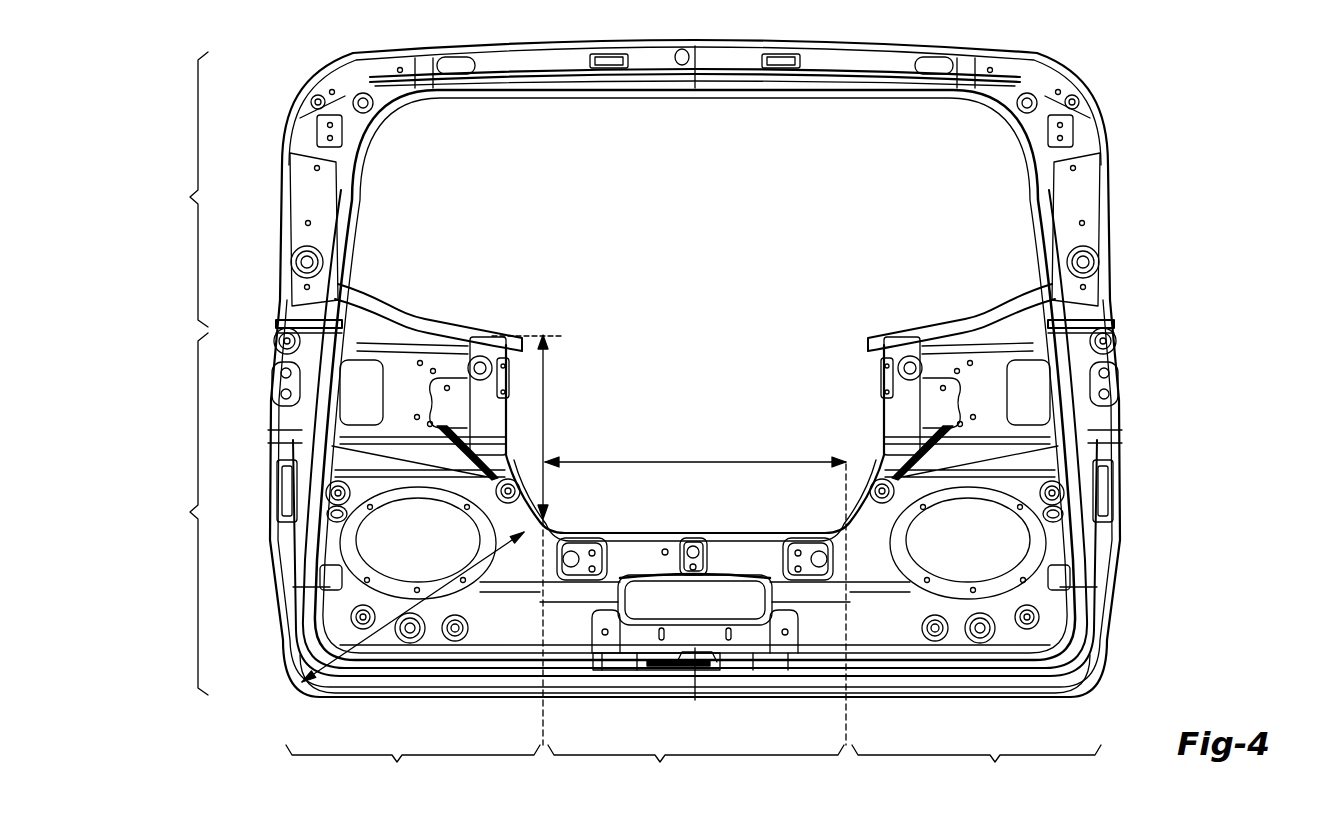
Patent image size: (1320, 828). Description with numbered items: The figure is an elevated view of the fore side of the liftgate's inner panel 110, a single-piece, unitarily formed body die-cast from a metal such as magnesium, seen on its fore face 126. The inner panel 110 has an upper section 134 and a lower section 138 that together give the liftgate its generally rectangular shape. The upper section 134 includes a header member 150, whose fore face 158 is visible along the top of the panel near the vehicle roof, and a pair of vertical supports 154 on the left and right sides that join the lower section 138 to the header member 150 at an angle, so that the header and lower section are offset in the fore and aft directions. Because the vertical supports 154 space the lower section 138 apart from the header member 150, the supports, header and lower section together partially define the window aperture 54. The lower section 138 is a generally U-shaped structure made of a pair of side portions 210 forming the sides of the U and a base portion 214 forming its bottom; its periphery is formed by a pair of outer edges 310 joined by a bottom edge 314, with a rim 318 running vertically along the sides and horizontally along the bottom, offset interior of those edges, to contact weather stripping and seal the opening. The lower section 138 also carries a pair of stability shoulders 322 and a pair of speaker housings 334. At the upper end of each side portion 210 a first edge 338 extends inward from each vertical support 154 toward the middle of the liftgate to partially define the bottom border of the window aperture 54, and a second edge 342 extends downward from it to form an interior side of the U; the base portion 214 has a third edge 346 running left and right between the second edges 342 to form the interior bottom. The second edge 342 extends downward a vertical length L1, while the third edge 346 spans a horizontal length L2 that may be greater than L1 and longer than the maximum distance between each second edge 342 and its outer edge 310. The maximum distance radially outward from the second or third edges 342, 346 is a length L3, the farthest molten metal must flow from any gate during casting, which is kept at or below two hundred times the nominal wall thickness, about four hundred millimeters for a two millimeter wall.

The inner panel 110 is at (1088, 89).
The header member 150 is at (878, 52).
The fore face of header member 158 is at (826, 52).
The window aperture 54 is at (1038, 193).
The vertical supports 154 is at (345, 207).
The upper section 134 is at (184, 189).
The lower section 138 is at (184, 514).
The first edge 338 is at (400, 312).
The second edge 342 is at (496, 347).
The third edge 346 is at (691, 535).
The speaker housings 334 is at (473, 517).
The stability shoulders 322 is at (284, 485).
The outer edges 310 is at (268, 538).
The rim 318 is at (303, 577).
The fore face of inner panel 126 is at (1047, 610).
The bottom edge 314 is at (640, 703).
The side portions 210 is at (693, 767).
The base portion 214 is at (696, 767).
The vertical length L1 is at (547, 410).
The horizontal length L2 is at (714, 458).
The maximum radial distance L3 is at (386, 630).